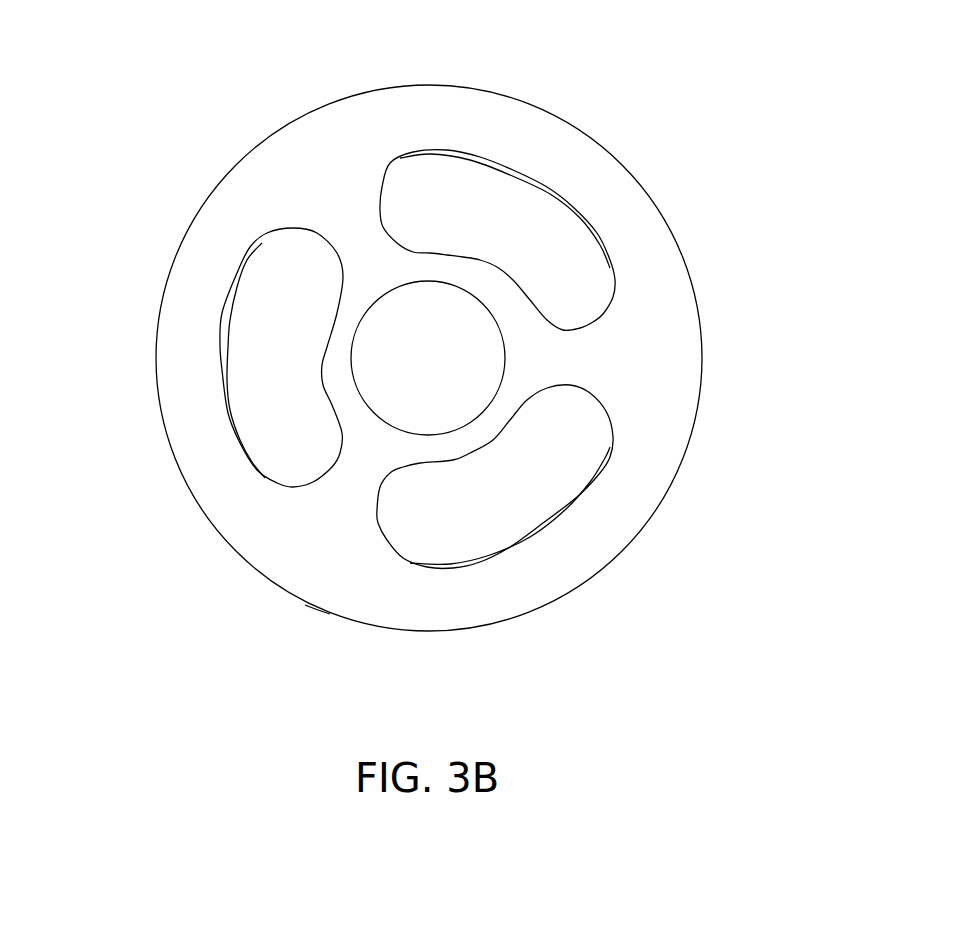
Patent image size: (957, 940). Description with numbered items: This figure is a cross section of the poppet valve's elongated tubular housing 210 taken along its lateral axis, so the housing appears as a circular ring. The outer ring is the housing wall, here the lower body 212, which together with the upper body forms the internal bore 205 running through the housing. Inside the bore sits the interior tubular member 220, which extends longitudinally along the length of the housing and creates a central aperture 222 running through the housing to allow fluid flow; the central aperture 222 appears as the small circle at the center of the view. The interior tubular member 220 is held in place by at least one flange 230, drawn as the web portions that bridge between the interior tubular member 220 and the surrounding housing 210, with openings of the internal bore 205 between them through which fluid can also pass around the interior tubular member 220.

The elongated tubular housing 210 is at (618, 58).
The internal bore 205 is at (532, 245).
The lower body 212 is at (305, 605).
The interior tubular member 220 is at (487, 447).
The central aperture 222 is at (441, 335).
The flange 230 is at (283, 457).